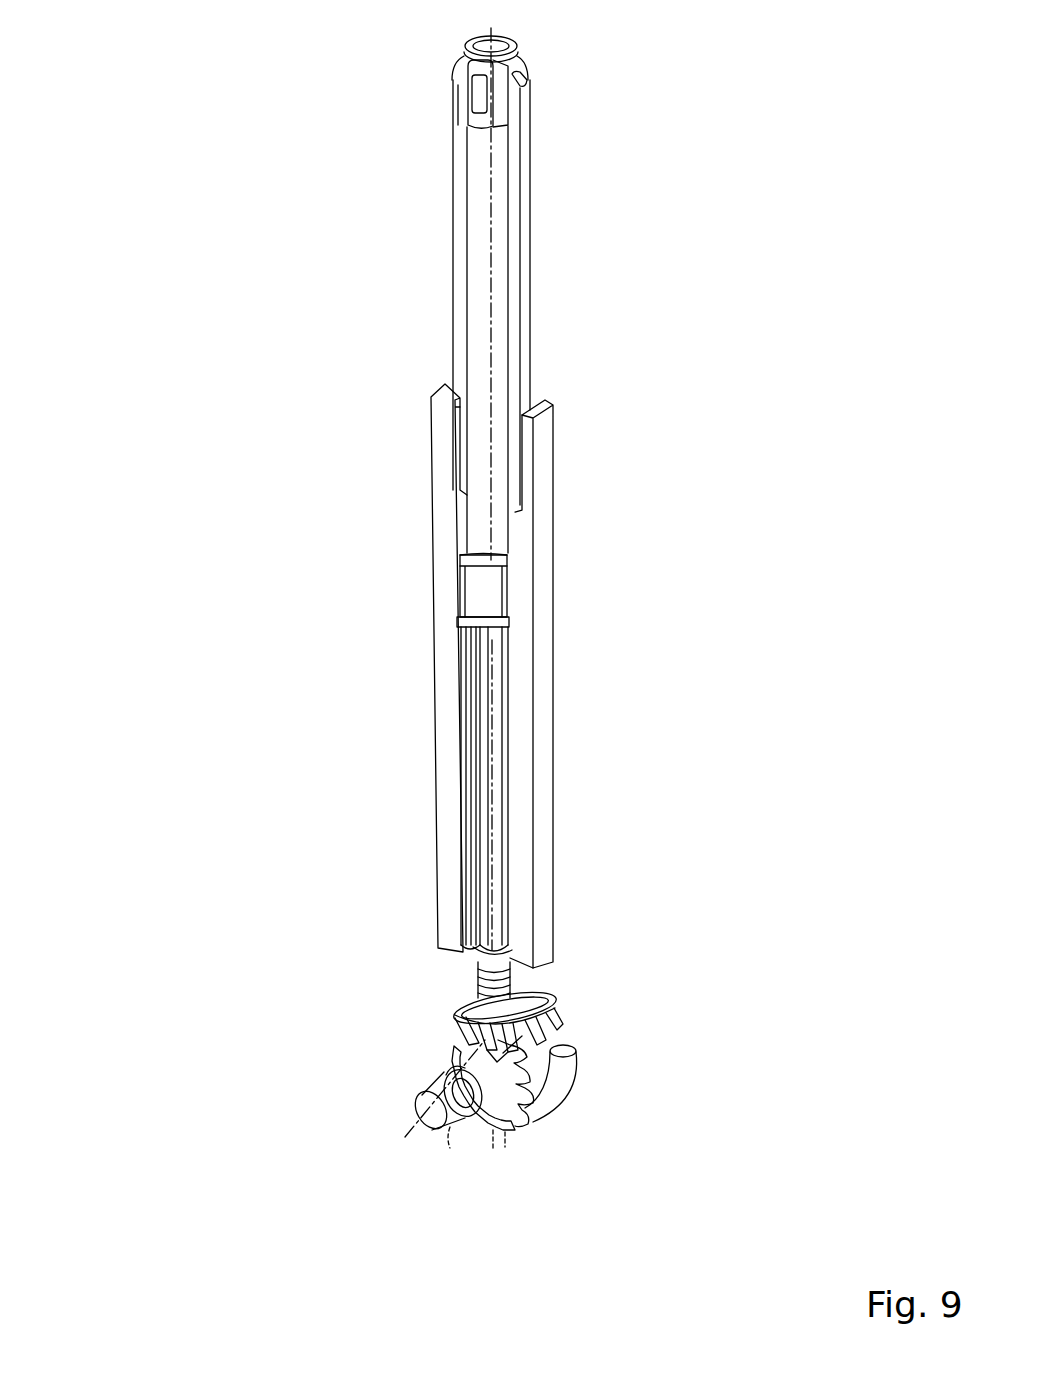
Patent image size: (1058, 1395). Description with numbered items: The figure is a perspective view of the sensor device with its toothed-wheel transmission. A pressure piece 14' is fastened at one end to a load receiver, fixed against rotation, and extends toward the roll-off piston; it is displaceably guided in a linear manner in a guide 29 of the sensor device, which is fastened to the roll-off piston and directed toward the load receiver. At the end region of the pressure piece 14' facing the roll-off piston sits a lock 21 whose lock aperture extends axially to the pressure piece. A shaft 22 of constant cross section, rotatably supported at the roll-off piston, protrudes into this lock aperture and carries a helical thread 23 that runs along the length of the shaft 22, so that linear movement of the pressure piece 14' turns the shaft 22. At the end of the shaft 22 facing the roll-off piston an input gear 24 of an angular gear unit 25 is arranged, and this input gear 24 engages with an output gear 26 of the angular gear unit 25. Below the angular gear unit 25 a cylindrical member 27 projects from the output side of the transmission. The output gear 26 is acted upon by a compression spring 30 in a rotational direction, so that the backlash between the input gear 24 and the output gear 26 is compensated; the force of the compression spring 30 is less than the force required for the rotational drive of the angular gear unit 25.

The pressure piece 14' is at (706, 294).
The guide 29 is at (545, 445).
The lock 21 is at (477, 595).
The shaft 22 is at (505, 655).
The helical thread 23 is at (488, 830).
The input gear 24 is at (455, 1012).
The angular gear unit 25 is at (518, 1143).
The output gear 26 is at (507, 1130).
The drive shaft 27 is at (457, 1130).
The compression spring 30 is at (572, 1067).